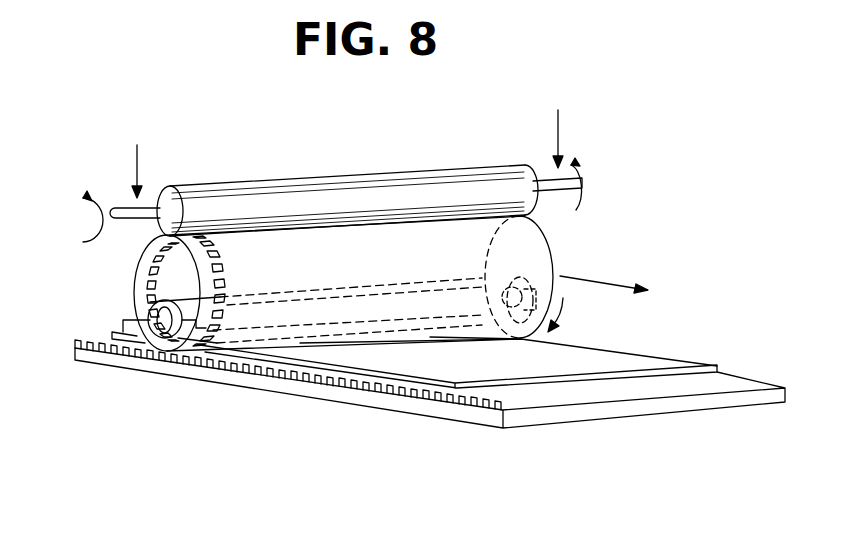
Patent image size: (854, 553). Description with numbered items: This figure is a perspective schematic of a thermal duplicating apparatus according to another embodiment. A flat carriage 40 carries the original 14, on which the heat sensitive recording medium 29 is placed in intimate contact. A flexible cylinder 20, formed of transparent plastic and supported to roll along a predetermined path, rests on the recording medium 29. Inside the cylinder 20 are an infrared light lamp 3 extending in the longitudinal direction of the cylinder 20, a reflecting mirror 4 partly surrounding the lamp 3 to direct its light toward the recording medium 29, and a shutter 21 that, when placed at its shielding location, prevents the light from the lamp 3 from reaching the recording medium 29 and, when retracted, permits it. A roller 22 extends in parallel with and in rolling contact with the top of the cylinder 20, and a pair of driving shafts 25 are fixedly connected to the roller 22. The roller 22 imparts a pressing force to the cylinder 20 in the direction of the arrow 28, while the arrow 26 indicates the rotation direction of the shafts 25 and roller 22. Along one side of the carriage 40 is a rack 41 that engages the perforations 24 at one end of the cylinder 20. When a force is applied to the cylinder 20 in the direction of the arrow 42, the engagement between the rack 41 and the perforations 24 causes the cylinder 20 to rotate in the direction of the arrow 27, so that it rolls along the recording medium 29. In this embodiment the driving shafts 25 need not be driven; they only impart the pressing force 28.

The infrared light lamp 3 is at (154, 340).
The reflecting mirror 4 is at (132, 352).
The original 14 is at (603, 379).
The flexible cylinder 20 is at (140, 267).
The shutter 21 is at (157, 353).
The roller 22 is at (355, 168).
The perforations 24 is at (215, 262).
The driving shafts 25 is at (158, 192).
The arrow indicating roller rotation direction 26 is at (86, 196).
The arrow indicating cylinder rotation direction 27 is at (570, 312).
The arrow indicating pressing force 28 is at (140, 152).
The heat sensitive recording medium 29 is at (640, 373).
The carriage 40 is at (540, 415).
The rack 41 is at (243, 369).
The arrow indicating applied force direction 42 is at (585, 278).